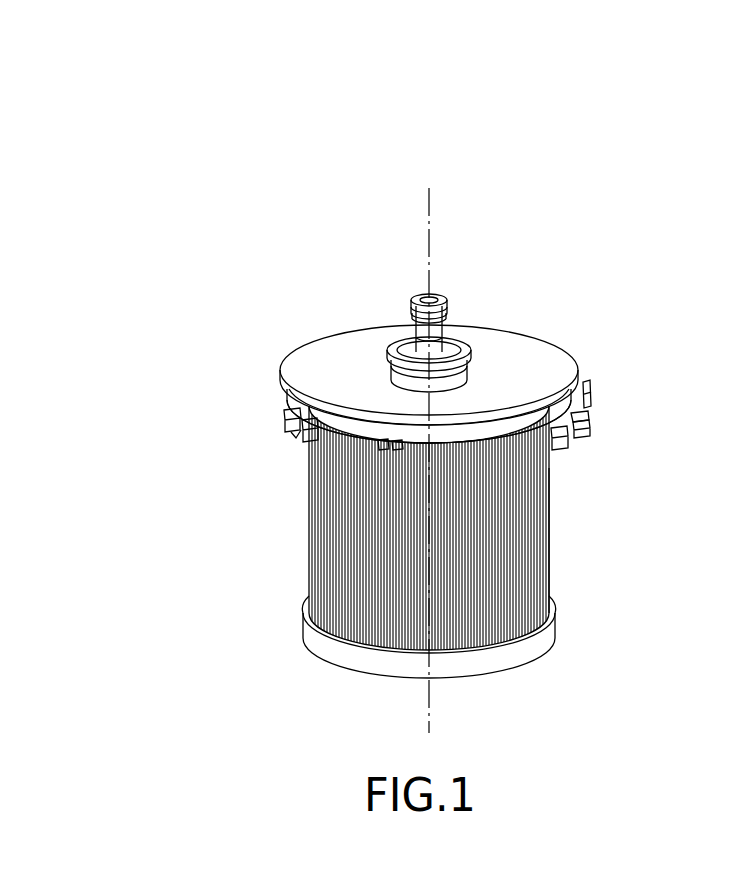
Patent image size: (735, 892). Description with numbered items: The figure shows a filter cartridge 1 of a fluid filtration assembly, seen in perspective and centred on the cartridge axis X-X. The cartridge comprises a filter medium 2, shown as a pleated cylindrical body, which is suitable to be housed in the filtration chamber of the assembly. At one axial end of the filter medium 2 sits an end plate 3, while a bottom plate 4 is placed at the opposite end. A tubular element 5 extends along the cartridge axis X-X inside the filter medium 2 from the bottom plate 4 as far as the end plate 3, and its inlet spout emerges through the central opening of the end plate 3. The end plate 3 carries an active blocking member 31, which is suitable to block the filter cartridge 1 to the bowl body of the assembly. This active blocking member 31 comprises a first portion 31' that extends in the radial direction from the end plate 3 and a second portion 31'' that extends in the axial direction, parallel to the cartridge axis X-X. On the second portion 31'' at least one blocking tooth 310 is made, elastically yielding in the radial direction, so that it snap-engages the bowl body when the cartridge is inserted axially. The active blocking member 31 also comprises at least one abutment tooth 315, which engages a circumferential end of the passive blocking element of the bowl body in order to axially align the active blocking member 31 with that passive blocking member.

The filter cartridge 1 is at (186, 343).
The filter medium 2 is at (277, 526).
The end plate 3 is at (308, 316).
The bottom plate 4 is at (284, 622).
The tubular element 5 is at (394, 316).
The active blocking member 31 is at (507, 448).
The first portion 31' is at (589, 313).
The second portion 31'' is at (642, 378).
The blocking tooth 310 is at (572, 424).
The abutment tooth 315 is at (543, 533).
The cartridge axis X-X is at (418, 182).